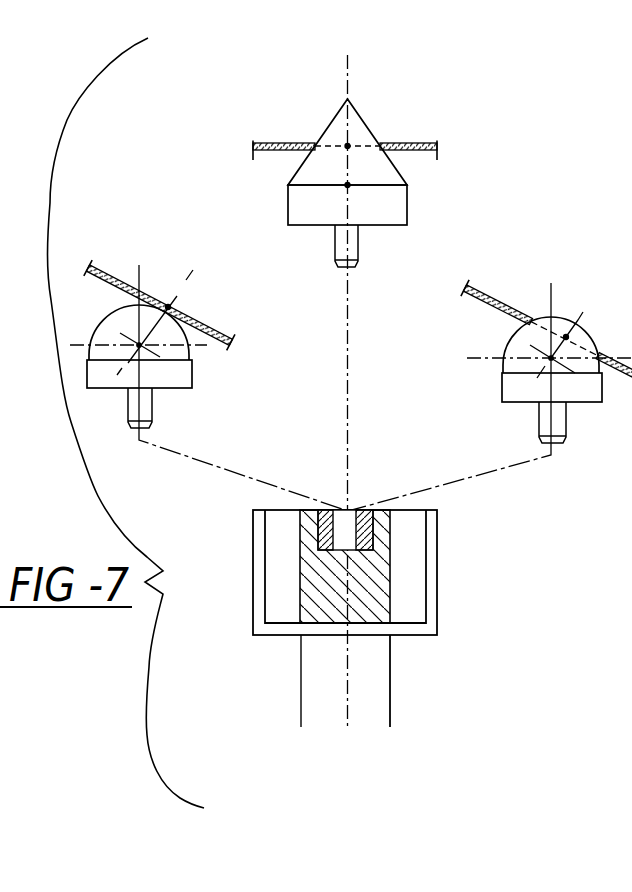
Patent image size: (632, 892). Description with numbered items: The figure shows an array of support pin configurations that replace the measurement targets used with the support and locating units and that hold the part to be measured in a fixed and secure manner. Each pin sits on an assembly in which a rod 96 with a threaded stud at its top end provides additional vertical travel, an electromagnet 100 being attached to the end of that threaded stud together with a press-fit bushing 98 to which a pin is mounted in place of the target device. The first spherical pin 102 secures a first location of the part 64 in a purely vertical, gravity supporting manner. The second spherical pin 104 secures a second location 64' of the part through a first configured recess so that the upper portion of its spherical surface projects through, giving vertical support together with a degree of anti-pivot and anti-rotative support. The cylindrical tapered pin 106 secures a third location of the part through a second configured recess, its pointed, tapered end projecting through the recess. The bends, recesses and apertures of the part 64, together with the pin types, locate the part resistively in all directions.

The part 64 is at (159, 275).
The second location of the part 64' is at (442, 217).
The rod 96 is at (312, 685).
The press-fit bushing 98 is at (373, 545).
The electromagnet 100 is at (437, 530).
The first spherical pin 102 is at (92, 304).
The second spherical pin 104 is at (486, 332).
The cylindrical tapered pin 106 is at (270, 179).